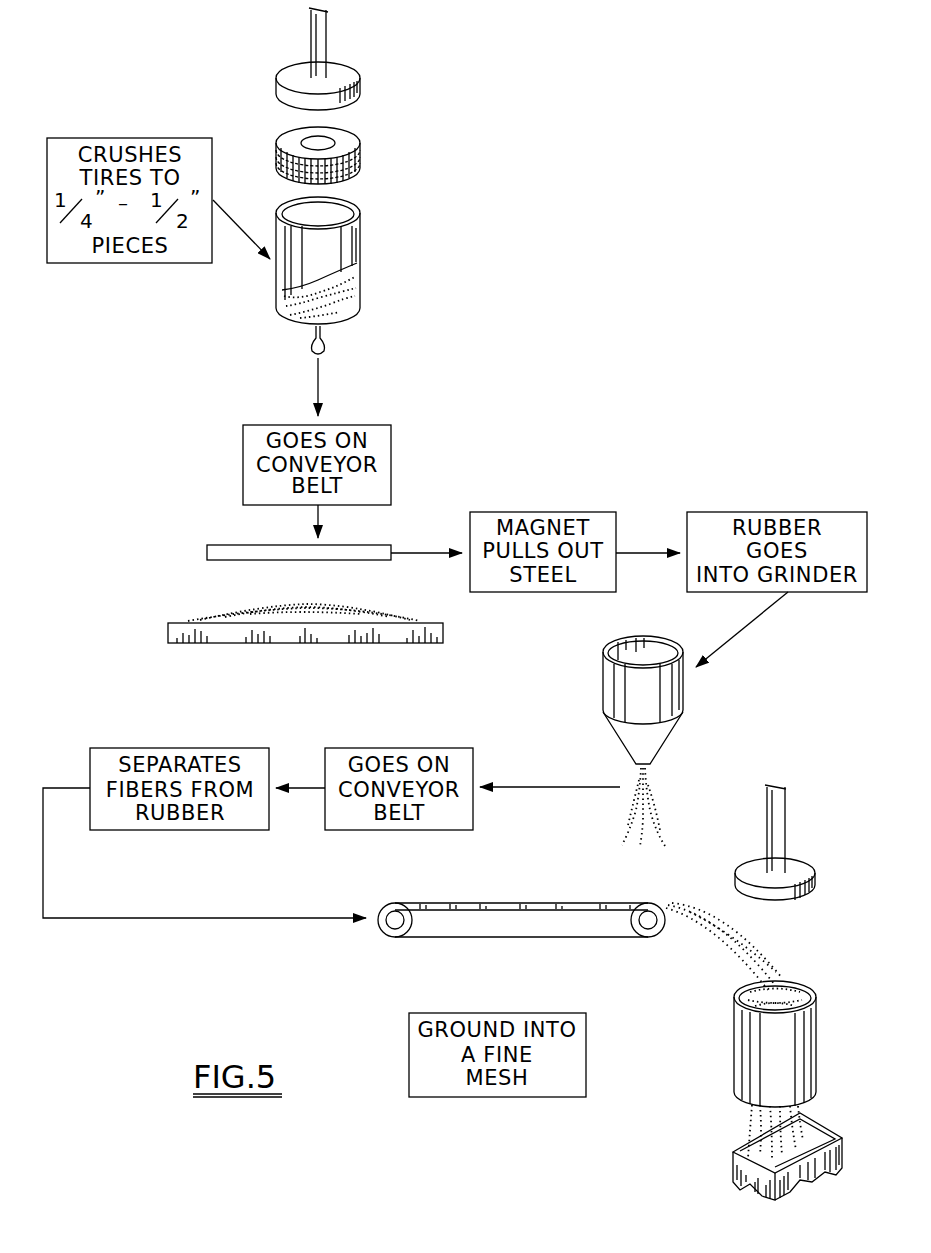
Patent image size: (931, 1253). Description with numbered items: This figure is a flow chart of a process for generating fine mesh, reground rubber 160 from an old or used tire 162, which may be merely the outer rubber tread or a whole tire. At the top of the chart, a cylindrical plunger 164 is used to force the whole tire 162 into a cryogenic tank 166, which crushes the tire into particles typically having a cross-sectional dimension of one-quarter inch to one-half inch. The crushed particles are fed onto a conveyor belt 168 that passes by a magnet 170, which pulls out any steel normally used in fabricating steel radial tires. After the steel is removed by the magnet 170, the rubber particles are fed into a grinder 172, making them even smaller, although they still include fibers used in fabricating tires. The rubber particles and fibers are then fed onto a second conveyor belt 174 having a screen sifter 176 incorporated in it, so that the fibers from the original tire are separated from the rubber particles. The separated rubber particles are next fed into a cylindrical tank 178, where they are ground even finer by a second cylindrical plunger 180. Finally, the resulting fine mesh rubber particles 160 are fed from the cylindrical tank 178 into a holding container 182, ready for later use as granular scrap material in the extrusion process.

The fine mesh reground rubber 160 is at (750, 1123).
The tire 162 is at (362, 150).
The cylindrical plunger 164 is at (362, 82).
The cryogenic tank 166 is at (360, 273).
The conveyor belt 168 is at (235, 545).
The magnet 170 is at (302, 643).
The grinder 172 is at (603, 688).
The conveyor belt 174 is at (383, 937).
The screen sifter 176 is at (513, 903).
The cylindrical tank 178 is at (732, 1032).
The cylindrical plunger 180 is at (790, 900).
The holding container 182 is at (732, 1160).